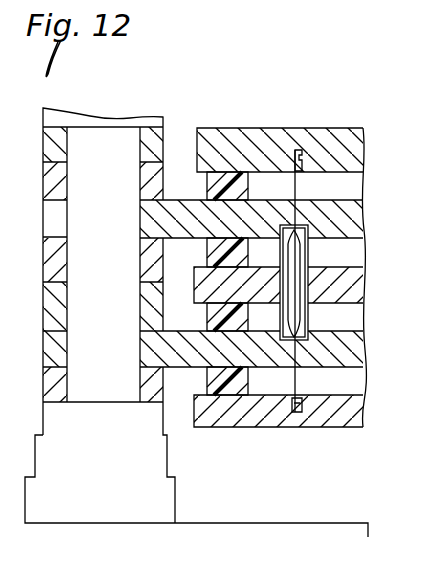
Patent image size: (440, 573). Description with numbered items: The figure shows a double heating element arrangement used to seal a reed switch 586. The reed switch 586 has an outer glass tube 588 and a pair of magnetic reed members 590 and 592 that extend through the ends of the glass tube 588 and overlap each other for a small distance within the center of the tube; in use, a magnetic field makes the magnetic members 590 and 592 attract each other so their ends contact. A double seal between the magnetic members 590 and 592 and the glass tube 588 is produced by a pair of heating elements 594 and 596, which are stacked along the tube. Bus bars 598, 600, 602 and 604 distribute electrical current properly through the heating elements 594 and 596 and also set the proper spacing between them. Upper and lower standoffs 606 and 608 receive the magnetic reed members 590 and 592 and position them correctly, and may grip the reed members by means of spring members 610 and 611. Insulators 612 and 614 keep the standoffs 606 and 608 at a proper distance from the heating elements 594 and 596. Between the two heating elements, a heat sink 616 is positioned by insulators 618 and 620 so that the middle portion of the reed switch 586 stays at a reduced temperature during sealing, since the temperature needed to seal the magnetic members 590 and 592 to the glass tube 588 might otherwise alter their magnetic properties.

The reed switch 586 is at (279, 282).
The outer glass tube 588 is at (309, 289).
The magnetic reed member 590 is at (299, 258).
The magnetic reed member 592 is at (299, 307).
The heating element 594 is at (328, 208).
The heating element 596 is at (338, 360).
The bus bar 598 is at (43, 178).
The bus bar 600 is at (43, 266).
The bus bar 602 is at (43, 312).
The bus bar 604 is at (43, 389).
The upper standoff 606 is at (231, 143).
The lower standoff 608 is at (319, 414).
The spring member 610 is at (298, 152).
The spring member 611 is at (297, 424).
The insulator 612 is at (224, 191).
The insulator 614 is at (210, 379).
The heat sink 616 is at (341, 277).
The insulator 618 is at (208, 255).
The insulator 620 is at (208, 315).